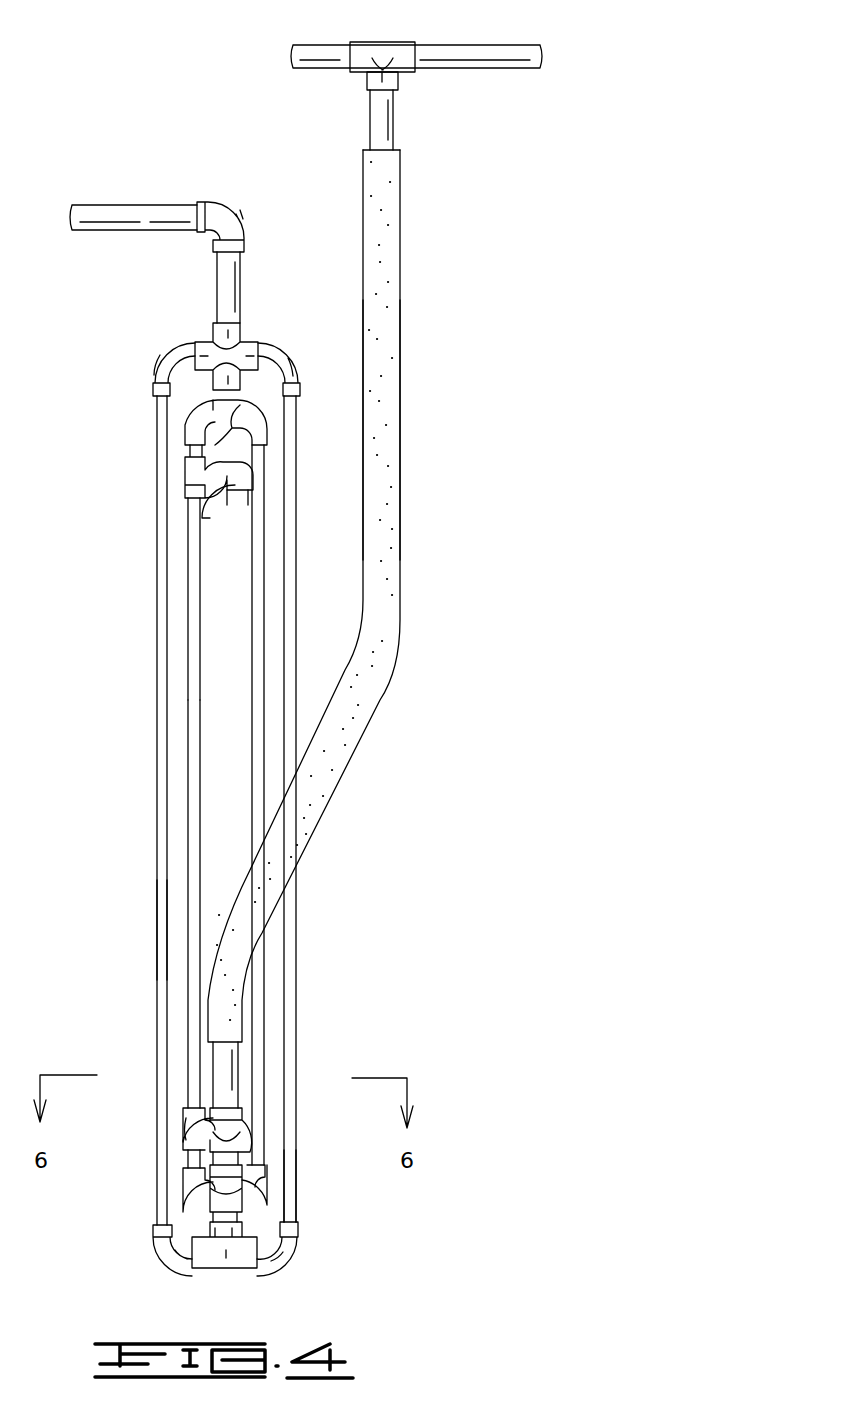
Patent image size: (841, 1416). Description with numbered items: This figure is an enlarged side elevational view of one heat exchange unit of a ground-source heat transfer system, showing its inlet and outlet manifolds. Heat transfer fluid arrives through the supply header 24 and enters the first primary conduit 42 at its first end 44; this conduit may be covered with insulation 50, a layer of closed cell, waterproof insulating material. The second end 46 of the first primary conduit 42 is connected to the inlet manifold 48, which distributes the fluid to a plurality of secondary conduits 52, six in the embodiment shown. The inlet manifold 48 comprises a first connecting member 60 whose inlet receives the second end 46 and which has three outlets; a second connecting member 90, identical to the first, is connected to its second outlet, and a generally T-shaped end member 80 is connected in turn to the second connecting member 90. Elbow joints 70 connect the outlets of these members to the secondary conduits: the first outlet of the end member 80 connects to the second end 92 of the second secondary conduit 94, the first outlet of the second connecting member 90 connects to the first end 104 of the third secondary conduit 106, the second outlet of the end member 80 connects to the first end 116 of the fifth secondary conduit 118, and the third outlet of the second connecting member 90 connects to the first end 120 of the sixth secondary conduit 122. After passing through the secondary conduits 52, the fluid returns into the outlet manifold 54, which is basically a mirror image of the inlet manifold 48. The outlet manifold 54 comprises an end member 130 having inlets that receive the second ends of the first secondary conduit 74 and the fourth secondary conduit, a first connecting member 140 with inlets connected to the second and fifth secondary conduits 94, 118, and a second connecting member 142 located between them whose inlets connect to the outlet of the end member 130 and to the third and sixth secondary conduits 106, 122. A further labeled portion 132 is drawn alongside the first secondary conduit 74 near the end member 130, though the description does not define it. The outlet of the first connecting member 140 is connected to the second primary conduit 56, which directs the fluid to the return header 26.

The supply header 24 is at (445, 45).
The return header 26 is at (150, 205).
The first primary conduit 42 is at (420, 403).
The first end 44 is at (395, 112).
The second end 46 is at (238, 1090).
The inlet manifold 48 is at (300, 1276).
The insulation 50 is at (400, 258).
The secondary conduits 52 is at (142, 755).
The outlet manifold 54 is at (158, 344).
The second primary conduit 56 is at (215, 292).
The first connecting member 60 is at (252, 1141).
The elbow joint 70 is at (262, 1190).
The first secondary conduit 74 is at (195, 835).
The end member 80 is at (187, 1278).
The second connecting member 90 is at (178, 1208).
The second end 92 is at (160, 1218).
The second secondary conduit 94 is at (160, 930).
The first end 104 is at (188, 1148).
The third secondary conduit 106 is at (190, 458).
The first end 116 is at (300, 1223).
The fifth secondary conduit 118 is at (296, 1030).
The first end 120 is at (262, 1158).
The sixth secondary conduit 122 is at (265, 977).
The end member 130 is at (205, 518).
The inner vertical pipe upper portion 132 is at (195, 567).
The first connecting member 140 is at (250, 345).
The second connecting member 142 is at (200, 400).